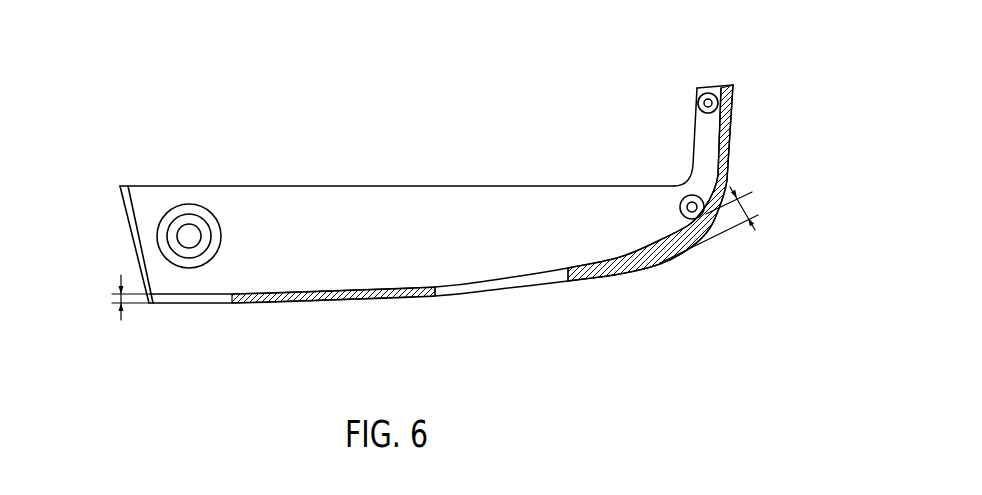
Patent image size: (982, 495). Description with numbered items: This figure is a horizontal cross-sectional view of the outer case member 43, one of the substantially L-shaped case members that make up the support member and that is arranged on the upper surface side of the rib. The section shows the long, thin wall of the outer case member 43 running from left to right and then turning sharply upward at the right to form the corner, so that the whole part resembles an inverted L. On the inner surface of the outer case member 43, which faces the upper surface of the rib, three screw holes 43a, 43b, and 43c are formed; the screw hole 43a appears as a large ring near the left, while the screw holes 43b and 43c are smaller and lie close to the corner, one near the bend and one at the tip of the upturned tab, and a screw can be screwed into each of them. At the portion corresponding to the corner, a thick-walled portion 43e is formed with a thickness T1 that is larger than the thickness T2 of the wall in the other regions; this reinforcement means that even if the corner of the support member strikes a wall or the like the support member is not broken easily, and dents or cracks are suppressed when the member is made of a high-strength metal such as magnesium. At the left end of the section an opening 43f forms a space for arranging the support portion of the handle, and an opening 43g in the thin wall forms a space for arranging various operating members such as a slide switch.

The outer case member 43 is at (407, 205).
The screw hole 43a is at (188, 204).
The screw hole 43b is at (683, 198).
The screw hole 43c is at (698, 103).
The thick-walled portion 43e is at (657, 271).
The opening 43f is at (152, 304).
The opening 43g is at (507, 284).
The thickness T1 is at (742, 208).
The thickness T2 is at (113, 297).